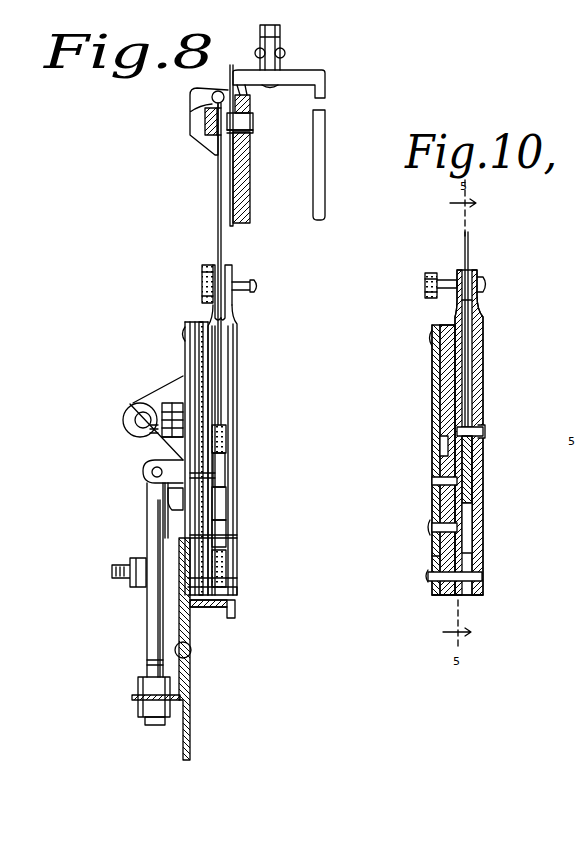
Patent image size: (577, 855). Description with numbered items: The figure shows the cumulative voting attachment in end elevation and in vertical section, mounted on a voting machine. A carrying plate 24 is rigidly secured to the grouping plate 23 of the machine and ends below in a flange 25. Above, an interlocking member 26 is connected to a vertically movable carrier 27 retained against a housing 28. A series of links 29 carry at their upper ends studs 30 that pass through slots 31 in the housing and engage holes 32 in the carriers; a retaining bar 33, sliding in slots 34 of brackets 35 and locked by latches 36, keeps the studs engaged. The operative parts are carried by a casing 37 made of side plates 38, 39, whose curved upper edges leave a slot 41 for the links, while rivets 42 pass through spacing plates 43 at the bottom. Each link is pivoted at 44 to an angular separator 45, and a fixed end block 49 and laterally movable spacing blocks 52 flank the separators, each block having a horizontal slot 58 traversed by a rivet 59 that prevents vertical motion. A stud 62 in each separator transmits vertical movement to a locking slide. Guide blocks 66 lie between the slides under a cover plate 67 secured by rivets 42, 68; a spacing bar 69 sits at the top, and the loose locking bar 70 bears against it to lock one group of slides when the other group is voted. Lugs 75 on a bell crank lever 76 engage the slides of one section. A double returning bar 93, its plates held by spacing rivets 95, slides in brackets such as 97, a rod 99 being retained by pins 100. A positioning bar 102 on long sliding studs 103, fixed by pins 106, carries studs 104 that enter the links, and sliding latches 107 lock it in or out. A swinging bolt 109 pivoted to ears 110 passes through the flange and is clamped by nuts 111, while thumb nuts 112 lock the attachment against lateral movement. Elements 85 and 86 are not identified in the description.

In FIG. 8, the grouping plate 23 is at (191, 725).
In FIG. 8, the carrying plate 24 is at (162, 625).
In FIG. 8, the flange 25 is at (148, 720).
In FIG. 8, the interlocking member 26 is at (281, 35).
In FIG. 8, the carrier 27 is at (325, 140).
In FIG. 8, the housing 28 is at (229, 185).
In FIG. 8, the link 29 is at (217, 212).
In FIG. 10, the link 29 is at (470, 250).
In FIG. 8, the stud 30 is at (251, 120).
In FIG. 8, the slot 31 is at (232, 88).
In FIG. 8, the hole 32 is at (253, 135).
In FIG. 8, the retaining bar 33 is at (205, 127).
In FIG. 8, the slot 34 is at (216, 137).
In FIG. 8, the bracket 35 is at (190, 115).
In FIG. 8, the latch 36 is at (211, 99).
In FIG. 8, the casing 37 is at (245, 460).
In FIG. 10, the casing 37 is at (490, 401).
In FIG. 8, the side plate 38 is at (237, 380).
In FIG. 10, the side plate 38 is at (485, 316).
In FIG. 8, the side plate 39 is at (210, 312).
In FIG. 10, the side plate 39 is at (458, 303).
In FIG. 8, the slot 41 is at (214, 262).
In FIG. 10, the rivet 42 is at (435, 577).
In FIG. 8, the spacing plate 43 is at (237, 592).
In FIG. 10, the spacing plate 43 is at (485, 596).
In FIG. 8, the pivot 44 is at (228, 438).
In FIG. 8, the separator 45 is at (237, 500).
In FIG. 10, the separator 45 is at (472, 520).
In FIG. 8, the end block 49 is at (237, 467).
In FIG. 10, the spacing block 52 is at (485, 466).
In FIG. 10, the slot 58 is at (485, 444).
In FIG. 10, the rivet 59 is at (487, 428).
In FIG. 8, the stud 62 is at (226, 532).
In FIG. 8, the guide block 66 is at (182, 548).
In FIG. 10, the guide block 66 is at (432, 548).
In FIG. 8, the cover plate 67 is at (190, 363).
In FIG. 10, the cover plate 67 is at (432, 408).
In FIG. 10, the rivet 68 is at (430, 525).
In FIG. 8, the spacing bar 69 is at (190, 321).
In FIG. 10, the spacing bar 69 is at (432, 345).
In FIG. 8, the locking bar 70 is at (200, 353).
In FIG. 10, the locking bar 70 is at (444, 380).
In FIG. 8, the lug 75 is at (165, 508).
In FIG. 8, the bell crank lever 76 is at (148, 462).
In FIG. 10, the catch 85 is at (440, 442).
In FIG. 10, the pin 86 is at (437, 462).
In FIG. 8, the double returning bar 93 is at (165, 405).
In FIG. 8, the spacing rivet 95 is at (165, 455).
In FIG. 8, the bracket 97 is at (122, 422).
In FIG. 8, the rod 99 is at (134, 418).
In FIG. 8, the pin 100 is at (135, 412).
In FIG. 8, the positioning bar 102 is at (202, 294).
In FIG. 10, the positioning bar 102 is at (425, 300).
In FIG. 8, the sliding stud 103 is at (259, 287).
In FIG. 10, the sliding stud 103 is at (487, 284).
In FIG. 8, the stud 104 is at (200, 282).
In FIG. 10, the stud 104 is at (440, 272).
In FIG. 10, the pin 106 is at (425, 278).
In FIG. 8, the sliding latch 107 is at (232, 262).
In FIG. 8, the swinging bolt 109 is at (150, 655).
In FIG. 8, the ear 110 is at (150, 480).
In FIG. 8, the nut 111 is at (135, 705).
In FIG. 8, the thumb nut 112 is at (112, 575).